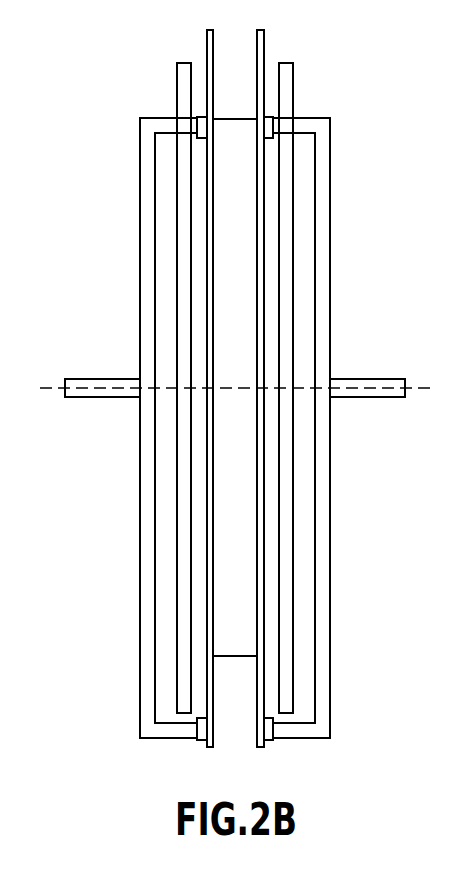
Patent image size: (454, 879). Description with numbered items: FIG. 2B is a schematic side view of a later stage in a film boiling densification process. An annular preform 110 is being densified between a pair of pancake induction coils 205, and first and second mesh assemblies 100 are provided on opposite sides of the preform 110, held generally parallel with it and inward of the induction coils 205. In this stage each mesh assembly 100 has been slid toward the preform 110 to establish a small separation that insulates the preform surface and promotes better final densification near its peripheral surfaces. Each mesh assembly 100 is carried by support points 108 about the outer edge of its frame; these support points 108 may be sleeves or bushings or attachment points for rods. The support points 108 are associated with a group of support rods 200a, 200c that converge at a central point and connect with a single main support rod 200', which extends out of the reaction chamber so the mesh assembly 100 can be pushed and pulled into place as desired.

The mesh assembly 100 is at (206, 33).
The preform 110 is at (233, 118).
The induction coil 205 is at (176, 75).
The support rod 200a is at (158, 118).
The support rod 200c is at (157, 740).
The support point 108 is at (201, 742).
The main support rod 200' is at (235, 370).